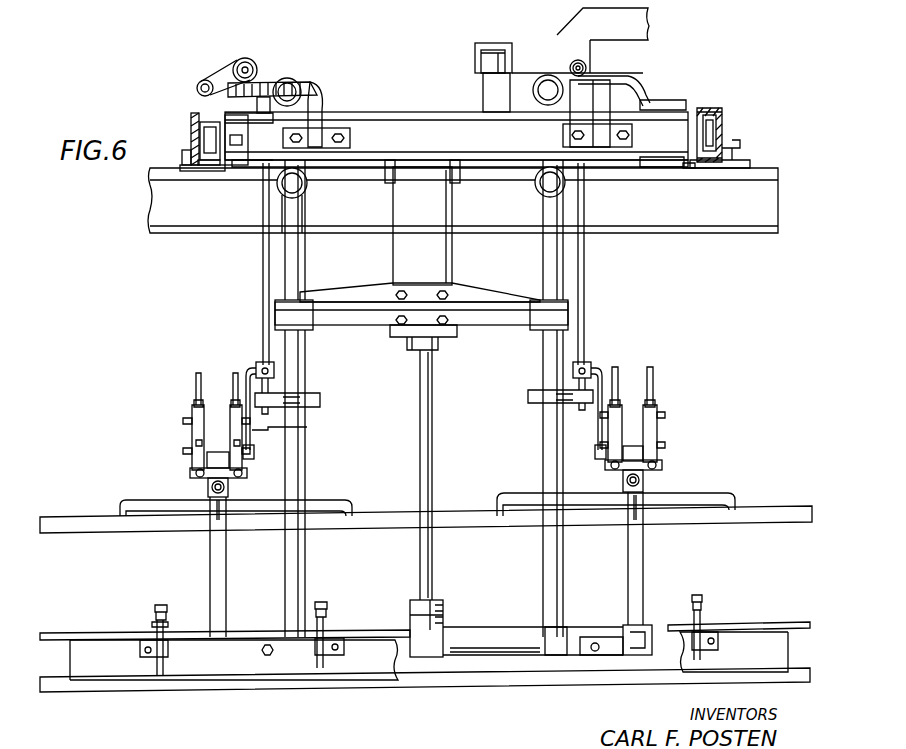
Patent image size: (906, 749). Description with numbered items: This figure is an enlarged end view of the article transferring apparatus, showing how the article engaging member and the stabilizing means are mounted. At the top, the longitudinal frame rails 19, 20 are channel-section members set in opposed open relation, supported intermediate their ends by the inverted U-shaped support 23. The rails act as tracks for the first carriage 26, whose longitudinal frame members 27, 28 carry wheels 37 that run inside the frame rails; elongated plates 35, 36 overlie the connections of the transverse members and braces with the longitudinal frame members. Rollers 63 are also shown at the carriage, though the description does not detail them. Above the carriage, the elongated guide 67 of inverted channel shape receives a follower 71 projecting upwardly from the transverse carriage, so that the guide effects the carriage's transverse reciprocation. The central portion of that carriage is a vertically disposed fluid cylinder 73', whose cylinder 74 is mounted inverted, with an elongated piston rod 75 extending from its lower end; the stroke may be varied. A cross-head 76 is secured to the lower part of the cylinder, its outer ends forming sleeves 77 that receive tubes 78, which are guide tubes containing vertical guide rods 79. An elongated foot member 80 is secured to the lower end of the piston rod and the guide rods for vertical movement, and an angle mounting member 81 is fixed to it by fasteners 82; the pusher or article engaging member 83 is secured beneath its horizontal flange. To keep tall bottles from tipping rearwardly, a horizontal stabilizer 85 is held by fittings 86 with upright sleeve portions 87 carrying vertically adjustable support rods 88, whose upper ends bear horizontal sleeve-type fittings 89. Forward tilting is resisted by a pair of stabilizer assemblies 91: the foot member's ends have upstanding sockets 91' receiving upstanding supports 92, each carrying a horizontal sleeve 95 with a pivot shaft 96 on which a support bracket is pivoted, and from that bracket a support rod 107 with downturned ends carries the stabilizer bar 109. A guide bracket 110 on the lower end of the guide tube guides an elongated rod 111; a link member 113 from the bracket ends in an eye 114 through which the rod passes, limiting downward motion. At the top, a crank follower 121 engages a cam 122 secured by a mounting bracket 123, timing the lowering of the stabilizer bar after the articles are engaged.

The longitudinal frame rail 19 is at (230, 4).
The longitudinal frame rail 20 is at (716, 108).
The inverted U-shaped support 23 is at (725, 234).
The first carriage 26 is at (473, 128).
The longitudinal frame member 27 is at (224, 166).
The longitudinal frame member 28 is at (688, 165).
The elongated plate 35 is at (243, 120).
The elongated plate 36 is at (672, 100).
The wheel 37 is at (210, 160).
The guide rollers 63 is at (290, 80).
The elongated guide 67 is at (468, 55).
The follower 71 is at (508, 62).
The fluid cylinder 73' is at (420, 280).
The cylinder 74 is at (450, 201).
The piston rod 75 is at (434, 390).
The cross-head 76 is at (497, 295).
The sleeve 77 is at (305, 330).
The guide tube 78 is at (306, 258).
The guide rod 79 is at (306, 460).
The foot member 80 is at (500, 632).
The angle mounting member 81 is at (382, 637).
The fastener 82 is at (265, 656).
The article engaging member 83 is at (445, 690).
The stabilizer 85 is at (95, 633).
The fitting 86 is at (140, 650).
The sleeve portion 87 is at (168, 660).
The support rod 88 is at (165, 642).
The horizontal sleeve-type fitting 89 is at (154, 620).
The stabilizer assembly 91 is at (408, 441).
The upstanding socket 91' is at (616, 622).
The upstanding support 92 is at (645, 550).
The horizontal sleeve 95 is at (212, 470).
The horizontal pivot shaft 96 is at (244, 470).
The support rod 107 is at (350, 500).
The stabilizer bar 109 is at (380, 526).
The guide bracket 110 is at (320, 401).
The elongated rod 111 is at (262, 273).
The link member 113 is at (296, 434).
The eye 114 is at (256, 368).
The follower 121 is at (588, 66).
The cam 122 is at (636, 82).
The mounting bracket 123 is at (355, 140).